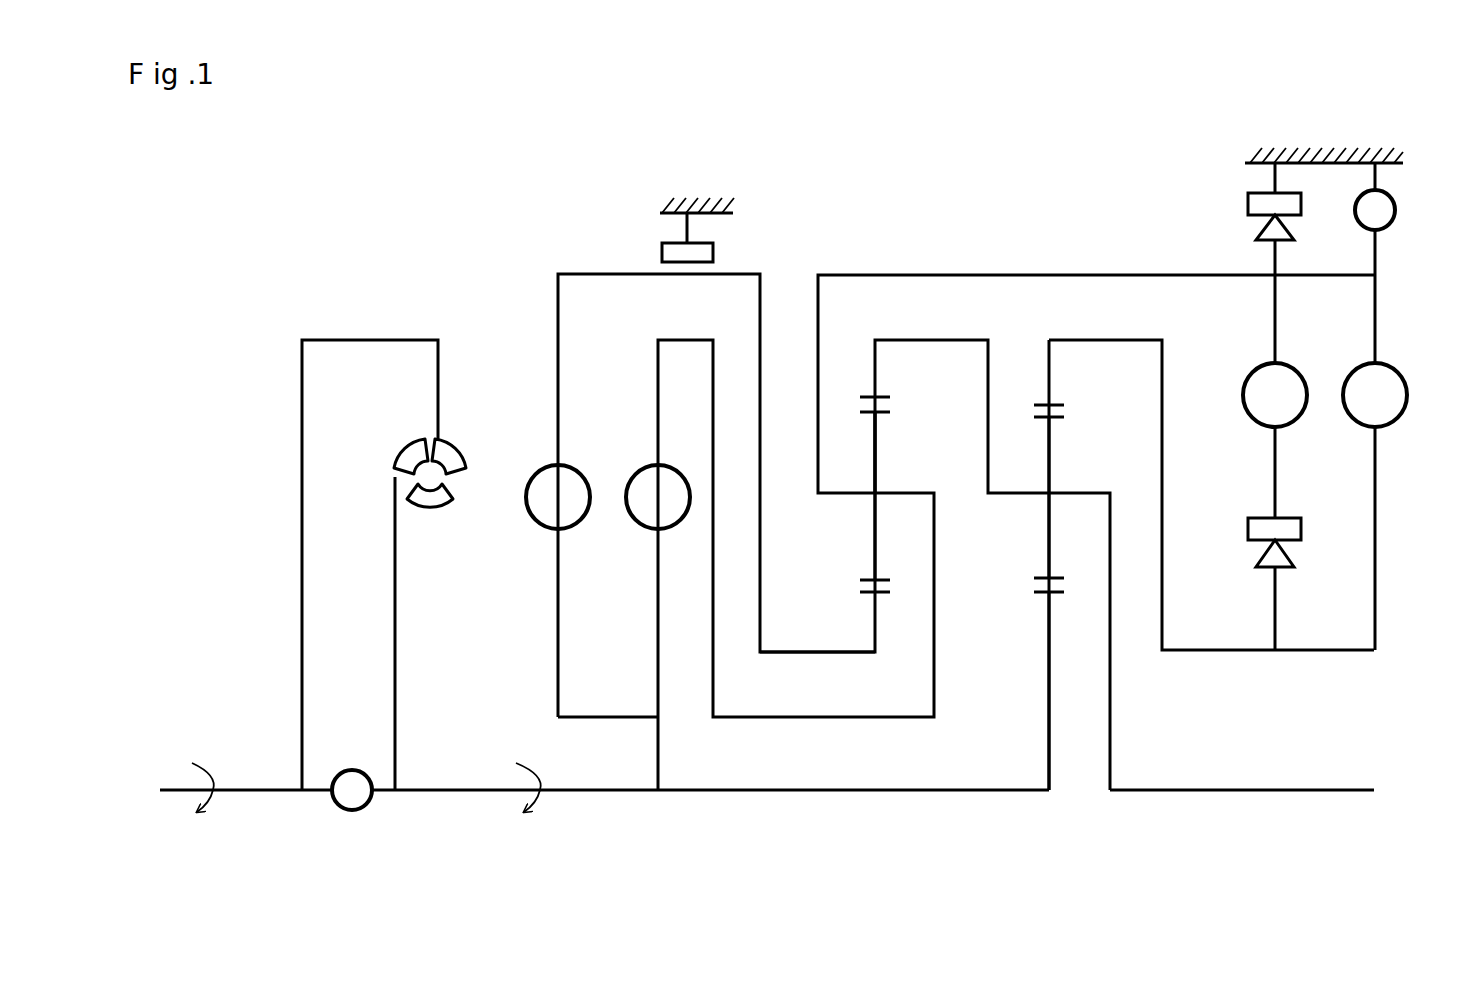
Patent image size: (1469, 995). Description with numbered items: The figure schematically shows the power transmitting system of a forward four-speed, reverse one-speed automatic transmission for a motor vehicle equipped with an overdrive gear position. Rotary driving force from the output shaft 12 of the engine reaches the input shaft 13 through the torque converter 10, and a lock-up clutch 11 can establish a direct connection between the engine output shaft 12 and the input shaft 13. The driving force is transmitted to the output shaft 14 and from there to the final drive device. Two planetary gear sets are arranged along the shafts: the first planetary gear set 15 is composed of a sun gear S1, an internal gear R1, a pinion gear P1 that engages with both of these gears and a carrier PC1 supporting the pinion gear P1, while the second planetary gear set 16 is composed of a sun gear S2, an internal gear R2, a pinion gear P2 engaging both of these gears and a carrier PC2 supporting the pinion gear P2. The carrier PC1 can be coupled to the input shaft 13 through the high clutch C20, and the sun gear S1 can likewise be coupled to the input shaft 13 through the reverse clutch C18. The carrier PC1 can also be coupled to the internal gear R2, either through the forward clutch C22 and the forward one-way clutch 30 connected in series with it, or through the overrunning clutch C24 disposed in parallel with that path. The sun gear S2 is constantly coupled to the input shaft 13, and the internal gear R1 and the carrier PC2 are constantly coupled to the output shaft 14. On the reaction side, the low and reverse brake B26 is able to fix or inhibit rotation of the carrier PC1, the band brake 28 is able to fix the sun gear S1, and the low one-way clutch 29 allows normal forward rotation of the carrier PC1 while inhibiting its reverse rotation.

The torque converter 10 is at (453, 449).
The lock-up clutch 11 is at (352, 769).
The output shaft of the engine 12 is at (256, 788).
The input shaft 13 is at (459, 792).
The output shaft 14 is at (1253, 788).
The first planetary gear set 15 is at (873, 300).
The second planetary gear set 16 is at (1048, 300).
The band brake 28 is at (687, 232).
The low one-way clutch 29 is at (1248, 204).
The forward one-way clutch 30 is at (1248, 530).
The reverse clutch C18 is at (532, 521).
The high clutch C20 is at (641, 527).
The forward clutch C22 is at (1255, 372).
The overrunning clutch C24 is at (1386, 426).
The low and reverse brake B26 is at (1388, 226).
The internal gear R1 is at (878, 378).
The internal gear R2 is at (1052, 378).
The carrier PC1 is at (904, 493).
The carrier PC2 is at (1090, 493).
The pinion gear P1 is at (873, 540).
The pinion gear P2 is at (1047, 540).
The sun gear S1 is at (873, 623).
The sun gear S2 is at (1047, 728).